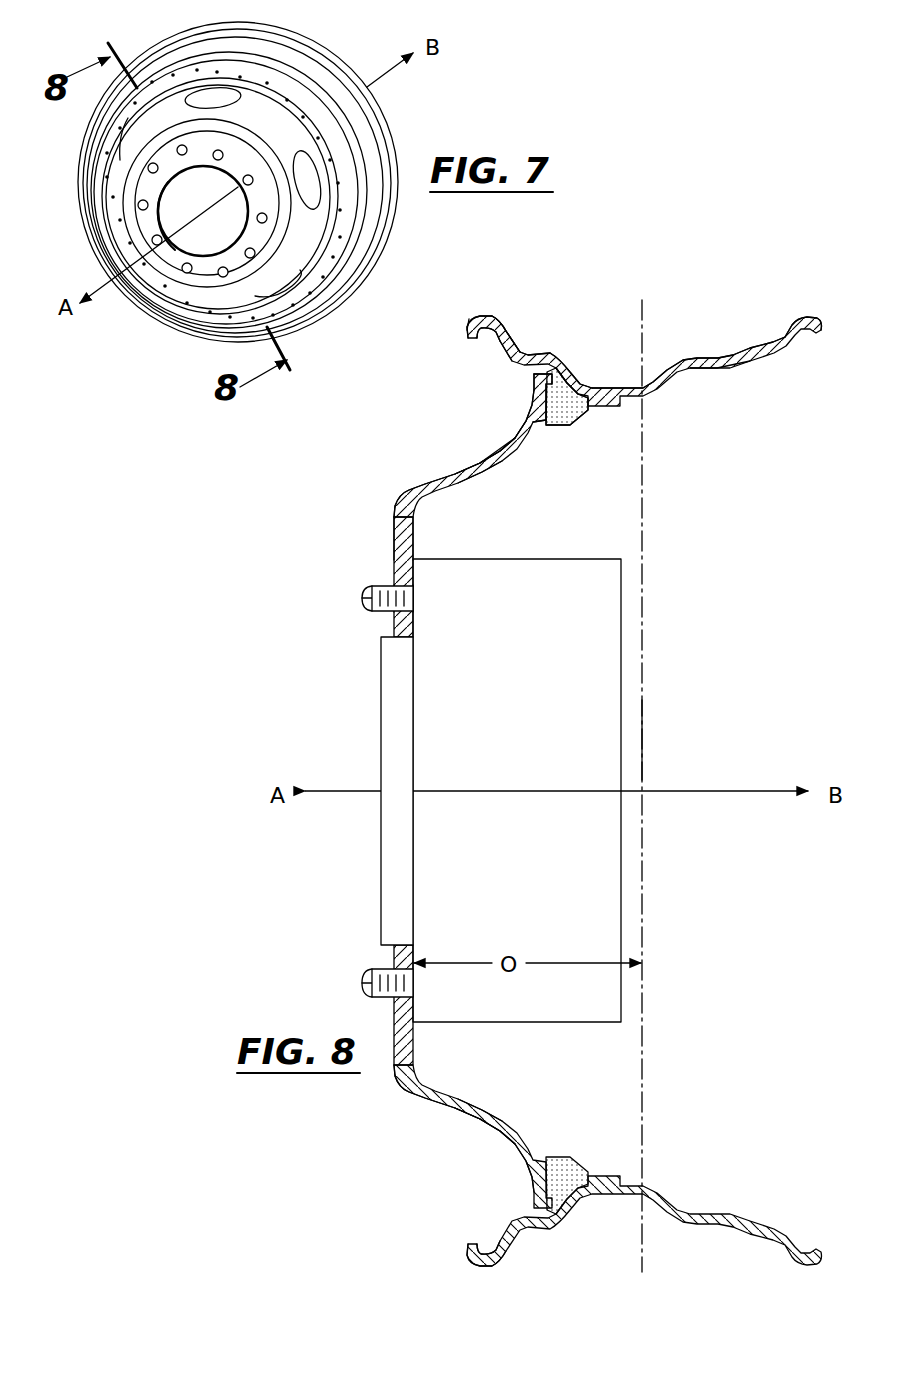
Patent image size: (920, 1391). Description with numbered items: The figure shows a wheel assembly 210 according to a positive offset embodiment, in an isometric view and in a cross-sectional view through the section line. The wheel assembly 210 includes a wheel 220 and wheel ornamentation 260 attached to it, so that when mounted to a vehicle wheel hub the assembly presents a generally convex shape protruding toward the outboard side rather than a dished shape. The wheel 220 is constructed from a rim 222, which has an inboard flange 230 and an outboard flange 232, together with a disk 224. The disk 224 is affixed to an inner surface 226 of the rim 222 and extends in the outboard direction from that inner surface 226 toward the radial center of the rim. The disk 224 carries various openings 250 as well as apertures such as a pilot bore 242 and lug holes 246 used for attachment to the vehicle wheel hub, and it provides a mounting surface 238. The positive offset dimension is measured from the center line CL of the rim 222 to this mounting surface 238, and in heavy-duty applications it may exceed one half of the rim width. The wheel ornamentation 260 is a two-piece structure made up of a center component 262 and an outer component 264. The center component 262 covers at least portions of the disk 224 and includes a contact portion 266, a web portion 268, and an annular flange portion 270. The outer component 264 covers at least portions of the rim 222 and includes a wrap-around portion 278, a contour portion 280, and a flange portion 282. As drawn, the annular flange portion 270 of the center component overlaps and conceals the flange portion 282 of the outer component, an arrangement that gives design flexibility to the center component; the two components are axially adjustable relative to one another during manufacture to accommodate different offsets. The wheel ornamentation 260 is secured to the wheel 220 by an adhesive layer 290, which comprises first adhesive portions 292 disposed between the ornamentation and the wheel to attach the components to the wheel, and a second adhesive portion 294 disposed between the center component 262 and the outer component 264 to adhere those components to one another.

In FIG. 7, the wheel assembly 210 is at (309, 19).
In FIG. 7, the wheel 220 is at (364, 121).
In FIG. 8, the rim 222 is at (740, 357).
In FIG. 8, the disk 224 is at (410, 540).
In FIG. 8, the inner surface 226 is at (730, 367).
In FIG. 8, the inboard flange 230 is at (803, 320).
In FIG. 8, the outboard flange 232 is at (482, 322).
In FIG. 8, the mounting surface 238 is at (413, 578).
In FIG. 8, the pilot bore 242 is at (410, 645).
In FIG. 7, the lug holes 246 is at (143, 207).
In FIG. 7, the openings 250 is at (283, 292).
In FIG. 7, the wheel ornamentation 260 is at (200, 300).
In FIG. 8, the wheel ornamentation 260 is at (456, 471).
In FIG. 8, the center component 262 is at (438, 483).
In FIG. 8, the outer component 264 is at (480, 338).
In FIG. 8, the contact portion 266 is at (395, 558).
In FIG. 8, the web portion 268 is at (497, 455).
In FIG. 8, the annular flange portion 270 is at (538, 373).
In FIG. 8, the wrap-around portion 278 is at (470, 322).
In FIG. 8, the contour portion 280 is at (506, 352).
In FIG. 8, the flange portion 282 is at (537, 388).
In FIG. 8, the adhesive layer 290 is at (557, 410).
In FIG. 8, the first adhesive portions 292 is at (515, 352).
In FIG. 8, the second adhesive portion 294 is at (560, 385).
In FIG. 8, the center line CL is at (648, 735).